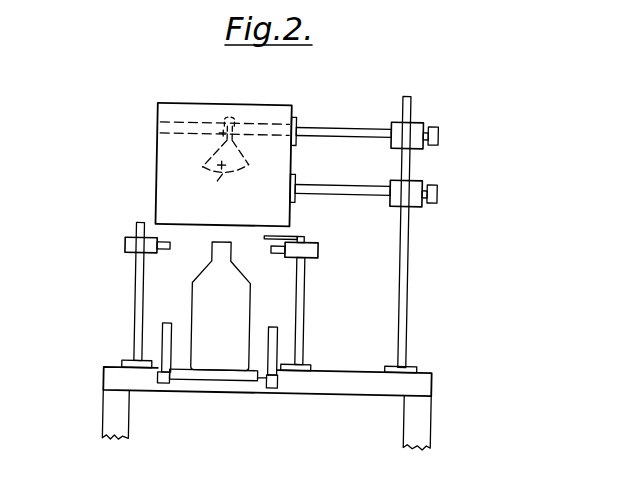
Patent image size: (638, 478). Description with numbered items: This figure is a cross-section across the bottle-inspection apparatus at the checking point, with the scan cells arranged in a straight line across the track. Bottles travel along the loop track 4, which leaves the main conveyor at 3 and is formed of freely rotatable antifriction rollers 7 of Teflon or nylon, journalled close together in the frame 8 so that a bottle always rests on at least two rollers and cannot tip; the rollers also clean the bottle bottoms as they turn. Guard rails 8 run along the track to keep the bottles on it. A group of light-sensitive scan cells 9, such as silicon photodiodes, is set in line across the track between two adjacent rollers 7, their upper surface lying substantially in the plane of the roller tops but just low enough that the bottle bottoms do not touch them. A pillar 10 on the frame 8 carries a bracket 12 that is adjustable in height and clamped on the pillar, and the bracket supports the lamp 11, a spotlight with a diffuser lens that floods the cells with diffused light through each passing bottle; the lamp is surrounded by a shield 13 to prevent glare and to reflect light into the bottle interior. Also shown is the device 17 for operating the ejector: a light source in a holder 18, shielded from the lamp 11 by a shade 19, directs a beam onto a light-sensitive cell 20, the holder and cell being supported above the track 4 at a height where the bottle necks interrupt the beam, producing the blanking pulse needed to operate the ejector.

The loop track departure point 3 is at (165, 336).
The loop track 4 is at (263, 383).
The antifriction rollers 7 is at (177, 380).
The frame 8 is at (427, 425).
The light-sensitive scan cells 9 is at (228, 378).
The pillar 10 is at (405, 277).
The lamp 11 is at (219, 172).
The bracket 12 is at (338, 129).
The shield 13 is at (157, 163).
The ejector triggering device 17 is at (303, 311).
The lamp holder 18 is at (310, 249).
The shade 19 is at (292, 234).
The light-sensitive cell 20 is at (125, 244).